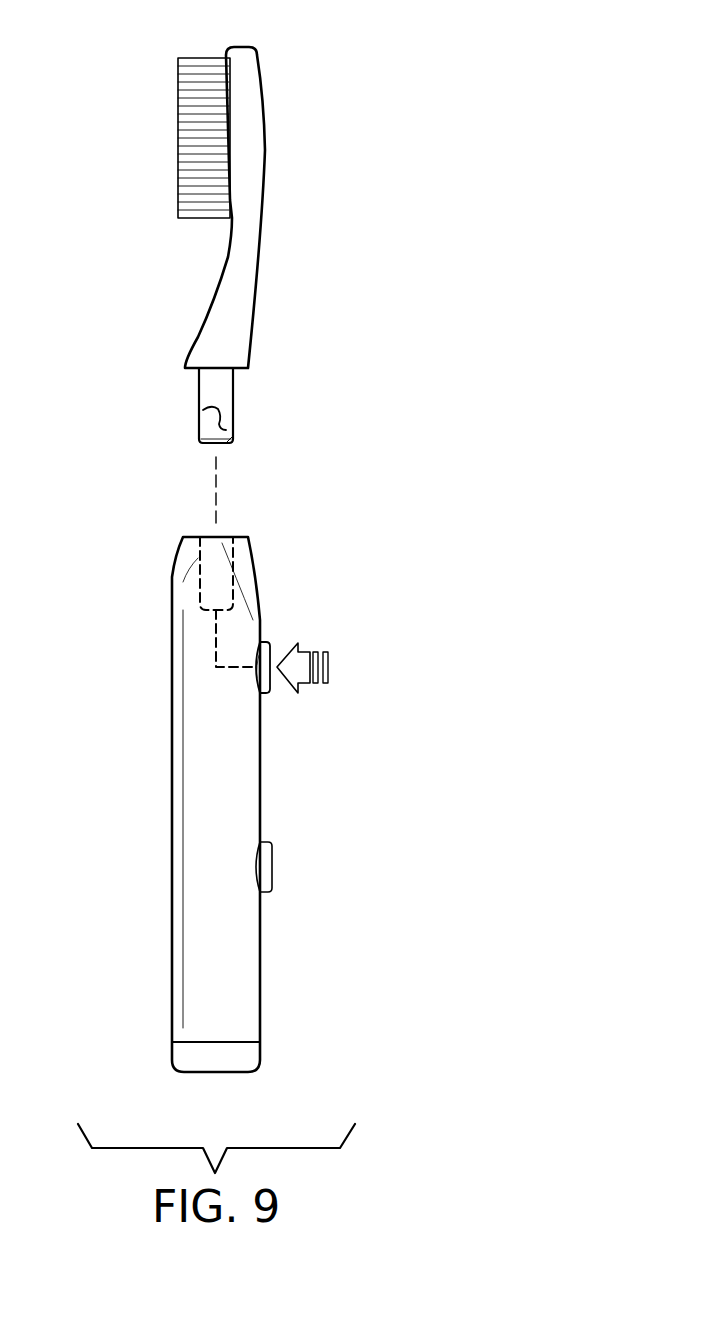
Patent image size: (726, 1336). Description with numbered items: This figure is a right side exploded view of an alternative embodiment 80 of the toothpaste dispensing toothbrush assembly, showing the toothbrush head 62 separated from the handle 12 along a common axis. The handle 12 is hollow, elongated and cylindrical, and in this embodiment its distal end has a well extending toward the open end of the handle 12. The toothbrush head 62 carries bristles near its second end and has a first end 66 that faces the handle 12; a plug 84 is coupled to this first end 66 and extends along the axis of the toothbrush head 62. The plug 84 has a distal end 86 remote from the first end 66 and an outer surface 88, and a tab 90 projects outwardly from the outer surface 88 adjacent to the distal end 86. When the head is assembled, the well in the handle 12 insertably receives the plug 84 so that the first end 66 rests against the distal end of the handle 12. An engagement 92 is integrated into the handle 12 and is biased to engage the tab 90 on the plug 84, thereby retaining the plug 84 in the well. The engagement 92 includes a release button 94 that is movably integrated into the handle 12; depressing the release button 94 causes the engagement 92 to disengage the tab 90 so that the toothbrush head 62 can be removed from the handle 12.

The handle 12 is at (172, 742).
The toothbrush head 62 is at (262, 208).
The first end 66 is at (216, 371).
The alternative embodiment 80 is at (407, 610).
The plug 84 is at (232, 405).
The distal end 86 is at (221, 446).
The outer surface 88 is at (214, 407).
The tab 90 is at (237, 431).
The engagement 92 is at (202, 572).
The release button 94 is at (270, 647).